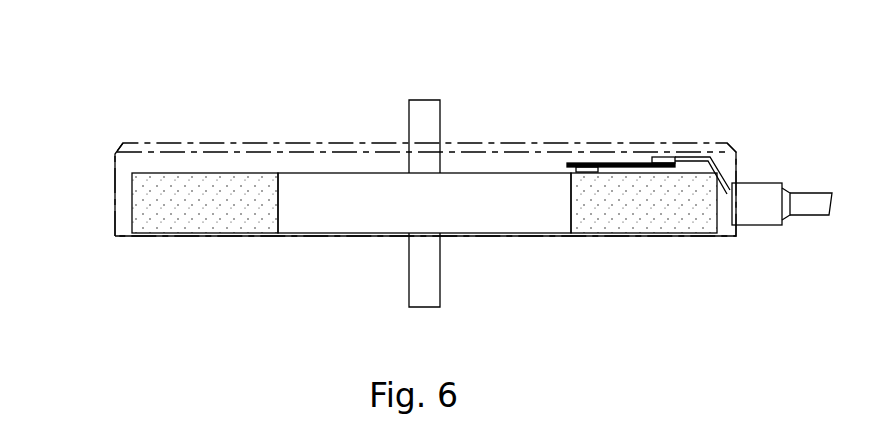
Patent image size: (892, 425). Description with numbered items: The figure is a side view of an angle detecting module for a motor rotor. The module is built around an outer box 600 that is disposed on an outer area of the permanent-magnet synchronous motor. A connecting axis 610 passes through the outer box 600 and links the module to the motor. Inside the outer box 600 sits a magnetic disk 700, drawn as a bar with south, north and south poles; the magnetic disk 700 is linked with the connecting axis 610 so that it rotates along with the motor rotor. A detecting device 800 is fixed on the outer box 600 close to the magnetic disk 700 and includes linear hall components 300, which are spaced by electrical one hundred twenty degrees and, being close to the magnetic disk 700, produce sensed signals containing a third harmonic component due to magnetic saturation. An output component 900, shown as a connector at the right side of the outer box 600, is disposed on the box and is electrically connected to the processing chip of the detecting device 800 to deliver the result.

The outer box 600 is at (168, 142).
The connecting axis 610 is at (423, 107).
The magnetic disk 700 is at (138, 197).
The linear hall component 300 is at (567, 163).
The detecting device 800 is at (620, 162).
The output component 900 is at (765, 187).